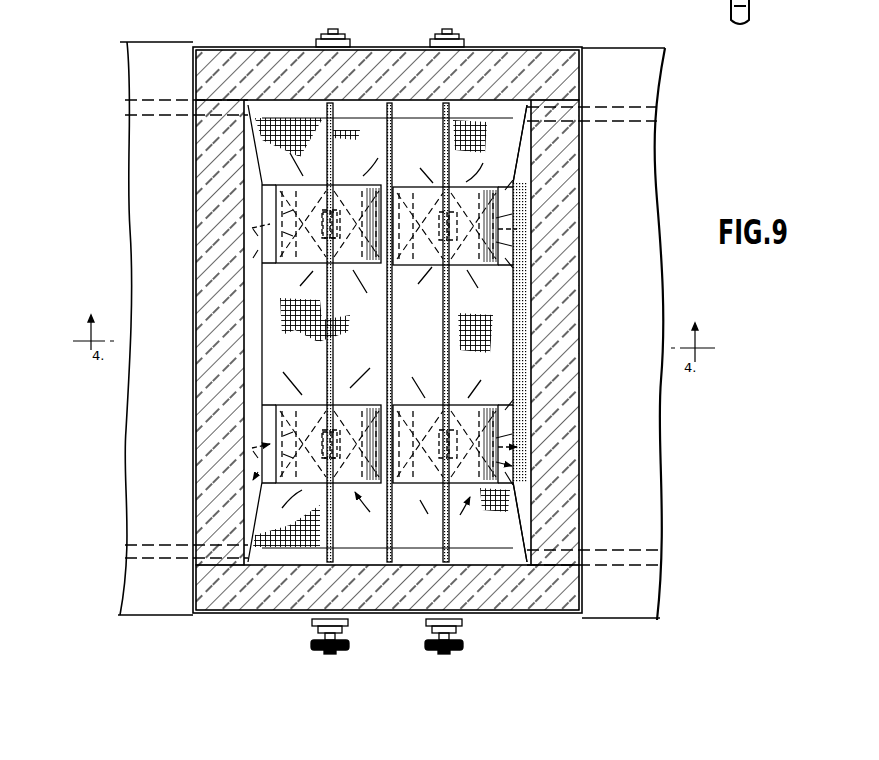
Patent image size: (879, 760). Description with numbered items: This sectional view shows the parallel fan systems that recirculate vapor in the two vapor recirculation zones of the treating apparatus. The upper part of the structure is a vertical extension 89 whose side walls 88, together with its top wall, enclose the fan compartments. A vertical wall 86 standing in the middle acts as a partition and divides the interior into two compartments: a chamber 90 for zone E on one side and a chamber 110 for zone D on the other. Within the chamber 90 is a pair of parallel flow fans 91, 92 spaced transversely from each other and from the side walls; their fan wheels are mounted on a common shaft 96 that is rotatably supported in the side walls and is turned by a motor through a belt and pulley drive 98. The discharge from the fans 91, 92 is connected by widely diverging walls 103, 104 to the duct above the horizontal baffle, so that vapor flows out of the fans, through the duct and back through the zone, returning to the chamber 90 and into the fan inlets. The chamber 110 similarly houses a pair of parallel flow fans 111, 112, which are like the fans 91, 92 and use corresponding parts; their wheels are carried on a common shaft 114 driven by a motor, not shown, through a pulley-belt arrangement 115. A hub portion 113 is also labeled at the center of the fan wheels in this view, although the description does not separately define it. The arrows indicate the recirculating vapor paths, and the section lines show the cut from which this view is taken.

The vertical wall 86 is at (389, 315).
The side walls 88 is at (286, 105).
The vertical extension 89 is at (248, 40).
The chamber 90 is at (410, 324).
The parallel flow fan 91 is at (485, 182).
The parallel flow fan 92 is at (454, 404).
The common shaft 96 is at (445, 362).
The belt and pulley drive 98 is at (464, 652).
The widely diverging wall 103 is at (520, 511).
The widely diverging wall 104 is at (523, 131).
The chamber 110 is at (290, 368).
The parallel flow fan 111 is at (344, 180).
The parallel flow fan 112 is at (339, 398).
The hub 113 is at (325, 200).
The common shaft 114 is at (336, 524).
The pulley-belt arrangement 115 is at (311, 645).